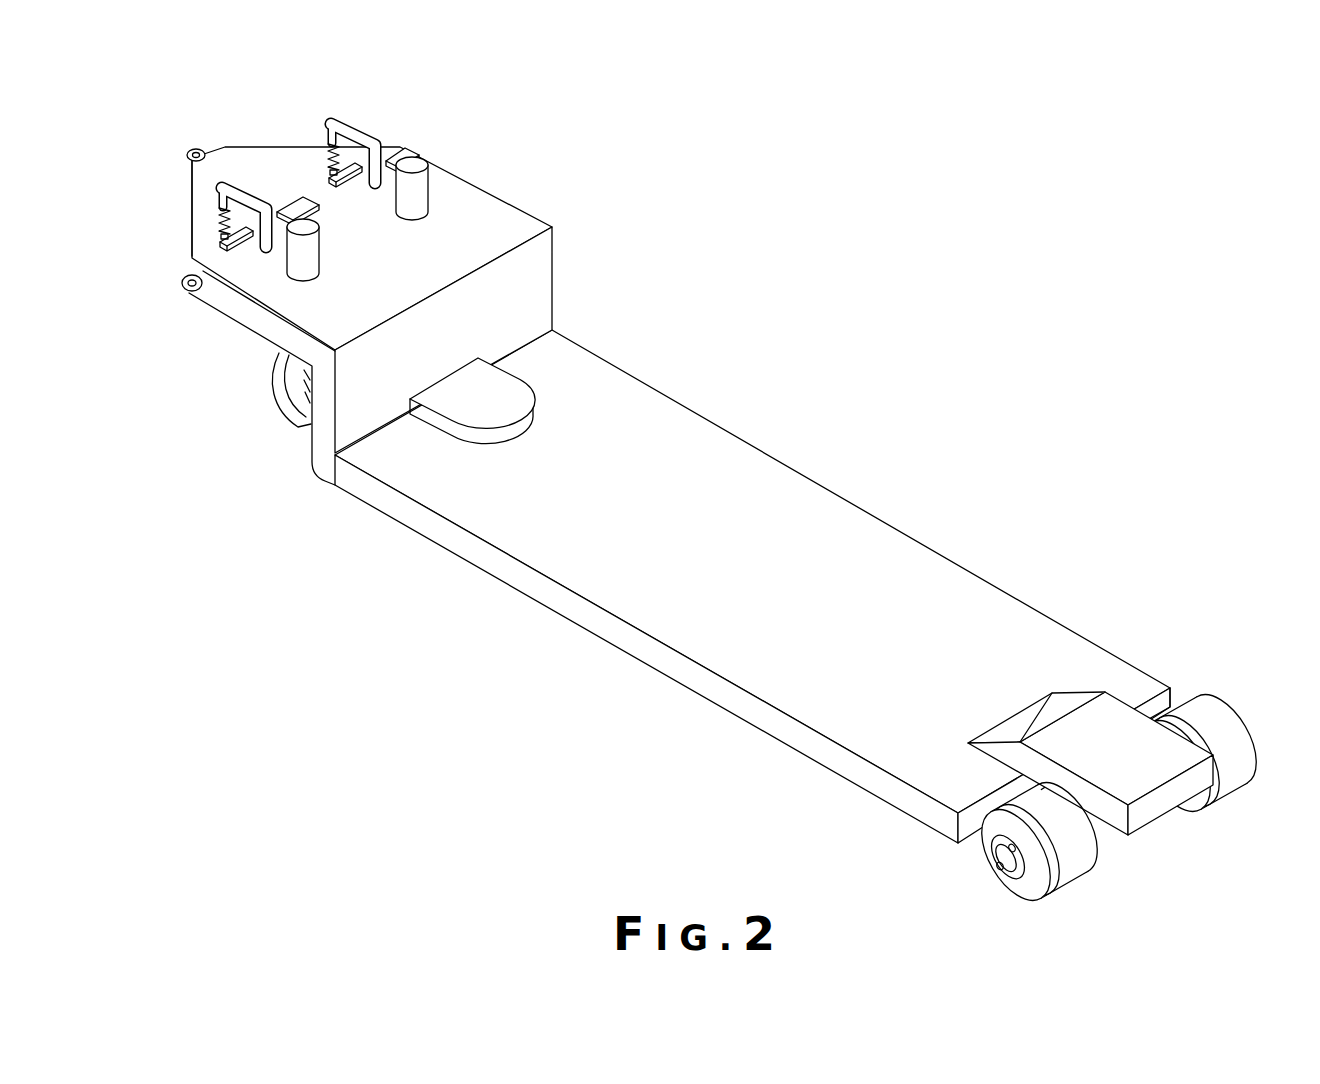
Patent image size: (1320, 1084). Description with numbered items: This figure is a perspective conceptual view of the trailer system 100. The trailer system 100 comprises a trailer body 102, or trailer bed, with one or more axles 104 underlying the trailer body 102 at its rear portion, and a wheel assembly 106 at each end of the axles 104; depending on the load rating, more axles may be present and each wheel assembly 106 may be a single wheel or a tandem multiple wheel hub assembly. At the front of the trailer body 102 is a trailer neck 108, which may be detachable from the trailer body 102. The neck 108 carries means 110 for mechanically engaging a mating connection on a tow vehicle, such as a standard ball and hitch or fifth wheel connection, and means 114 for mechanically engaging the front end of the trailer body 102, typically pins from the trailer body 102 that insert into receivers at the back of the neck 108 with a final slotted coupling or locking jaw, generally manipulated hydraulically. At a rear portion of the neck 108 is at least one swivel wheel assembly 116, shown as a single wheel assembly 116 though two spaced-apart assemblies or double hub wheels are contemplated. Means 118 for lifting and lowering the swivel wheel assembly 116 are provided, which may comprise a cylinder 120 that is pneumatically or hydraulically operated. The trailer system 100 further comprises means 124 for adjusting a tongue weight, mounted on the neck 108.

The trailer system 100 is at (645, 210).
The trailer body 102 is at (772, 578).
The axle 104 is at (1012, 857).
The wheel assembly 106 is at (1250, 690).
The trailer neck 108 is at (442, 359).
The means for mechanically engaging a mating connection on a tow vehicle 110 is at (178, 148).
The means for mechanically engaging a front end of the trailer body 114 is at (505, 397).
The swivel wheel assembly 116 is at (278, 392).
The means for lifting and lowering the swivel wheel assembly 118 is at (336, 239).
The cylinder 120 is at (308, 262).
The means for adjusting a tongue weight 124 is at (237, 166).